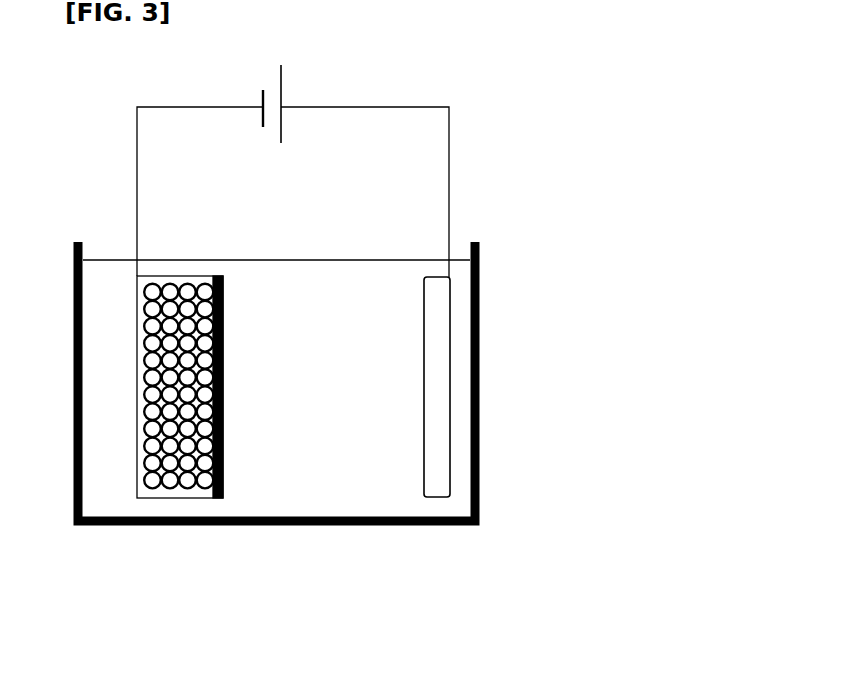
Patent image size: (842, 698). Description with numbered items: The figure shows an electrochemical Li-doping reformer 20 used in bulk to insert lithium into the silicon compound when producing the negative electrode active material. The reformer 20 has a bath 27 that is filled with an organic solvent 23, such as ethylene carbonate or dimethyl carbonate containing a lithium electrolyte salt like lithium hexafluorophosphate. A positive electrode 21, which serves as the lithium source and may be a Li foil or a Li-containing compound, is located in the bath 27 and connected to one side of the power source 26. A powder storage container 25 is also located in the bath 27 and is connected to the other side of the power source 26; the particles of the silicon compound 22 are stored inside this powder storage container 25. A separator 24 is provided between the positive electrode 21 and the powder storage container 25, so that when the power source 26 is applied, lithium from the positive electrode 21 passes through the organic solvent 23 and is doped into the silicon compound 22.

The electrochemical Li-doping reformer 20 is at (128, 93).
The positive electrode 21 is at (433, 333).
The silicon compound 22 is at (170, 460).
The organic solvent 23 is at (318, 285).
The separator 24 is at (230, 304).
The powder storage container 25 is at (170, 278).
The power source 26 is at (294, 79).
The bath 27 is at (401, 533).